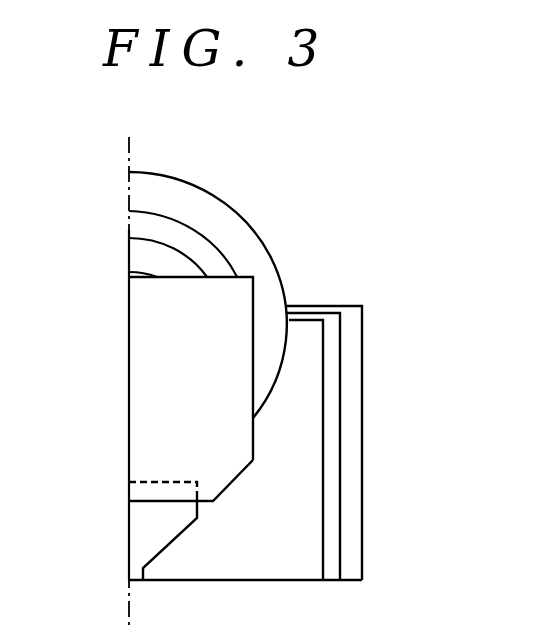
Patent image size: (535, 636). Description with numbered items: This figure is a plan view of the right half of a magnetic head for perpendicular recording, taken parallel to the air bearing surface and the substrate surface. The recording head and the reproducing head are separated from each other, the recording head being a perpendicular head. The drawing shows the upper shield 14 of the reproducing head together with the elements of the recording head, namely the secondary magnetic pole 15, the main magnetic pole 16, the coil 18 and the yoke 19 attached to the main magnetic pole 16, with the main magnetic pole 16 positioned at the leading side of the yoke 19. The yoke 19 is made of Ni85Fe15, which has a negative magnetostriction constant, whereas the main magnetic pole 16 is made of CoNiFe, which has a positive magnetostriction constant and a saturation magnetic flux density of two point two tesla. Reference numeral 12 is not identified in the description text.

The outer cylindrical member 12 is at (350, 430).
The upper shield 14 is at (330, 472).
The secondary magnetic pole 15 is at (240, 503).
The main magnetic pole 16 is at (153, 513).
The coil 18 is at (250, 246).
The yoke 19 is at (146, 366).